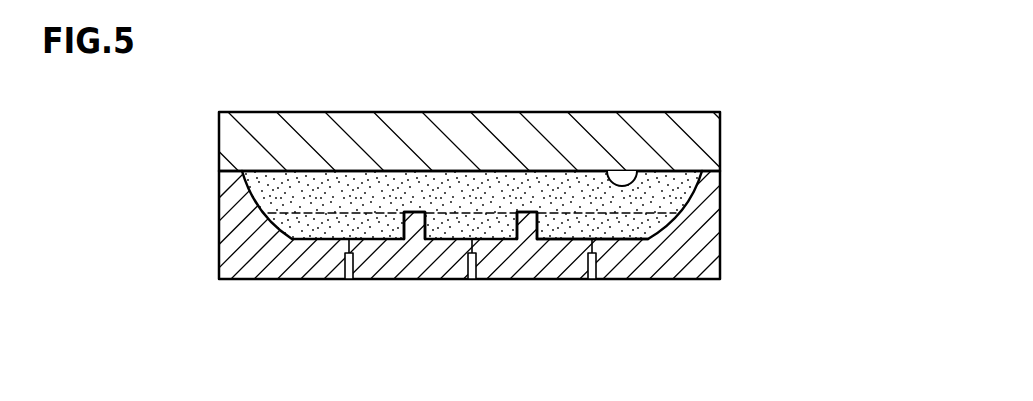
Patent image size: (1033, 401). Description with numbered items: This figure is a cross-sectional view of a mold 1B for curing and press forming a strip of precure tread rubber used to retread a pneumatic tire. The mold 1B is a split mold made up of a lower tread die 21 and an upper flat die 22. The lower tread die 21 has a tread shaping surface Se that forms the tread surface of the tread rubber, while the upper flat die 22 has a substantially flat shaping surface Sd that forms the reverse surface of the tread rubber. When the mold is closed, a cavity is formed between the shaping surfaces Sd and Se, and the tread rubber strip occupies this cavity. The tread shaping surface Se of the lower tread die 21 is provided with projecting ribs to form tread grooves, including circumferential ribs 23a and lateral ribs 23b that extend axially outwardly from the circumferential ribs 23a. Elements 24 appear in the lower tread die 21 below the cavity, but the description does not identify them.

The mold 1B is at (813, 139).
The lower tread die 21 is at (695, 223).
The upper flat die 22 is at (690, 148).
The circumferential ribs 23a is at (425, 225).
The lateral ribs 23b is at (302, 214).
The ejector pin 24 is at (350, 282).
The flat shaping surface Sd is at (638, 178).
The tread shaping surface Se is at (563, 230).